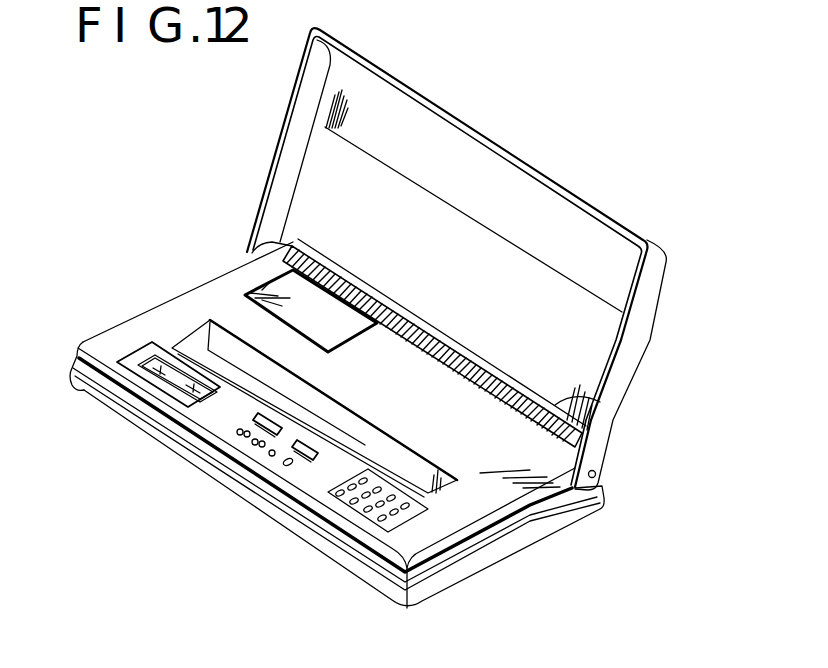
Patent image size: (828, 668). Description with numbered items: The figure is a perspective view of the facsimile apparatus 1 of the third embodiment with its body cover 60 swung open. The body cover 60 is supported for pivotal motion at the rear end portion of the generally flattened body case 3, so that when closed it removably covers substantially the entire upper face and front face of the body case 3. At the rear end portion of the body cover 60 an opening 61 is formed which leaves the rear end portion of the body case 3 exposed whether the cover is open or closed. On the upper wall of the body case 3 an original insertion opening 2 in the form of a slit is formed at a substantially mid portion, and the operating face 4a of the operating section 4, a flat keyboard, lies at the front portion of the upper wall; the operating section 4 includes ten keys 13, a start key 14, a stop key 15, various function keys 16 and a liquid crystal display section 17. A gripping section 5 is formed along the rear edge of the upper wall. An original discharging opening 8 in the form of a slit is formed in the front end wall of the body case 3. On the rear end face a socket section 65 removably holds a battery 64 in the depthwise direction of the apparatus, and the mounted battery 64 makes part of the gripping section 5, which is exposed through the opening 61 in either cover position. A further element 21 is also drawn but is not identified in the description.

The facsimile apparatus 1 is at (593, 170).
The original insertion opening 2 is at (490, 537).
The body case 3 is at (540, 464).
The operating section 4 is at (382, 535).
The operating face 4a is at (423, 515).
The gripping section 5 is at (560, 407).
The original discharging opening 8 is at (188, 438).
The ten keys 13 is at (342, 494).
The start key 14 is at (268, 434).
The stop key 15 is at (302, 462).
The function keys 16 is at (258, 447).
The liquid crystal display section 17 is at (172, 380).
The contact terminal strip 21 is at (497, 376).
The body cover 60 is at (467, 126).
The opening 61 is at (297, 240).
The battery 64 is at (263, 281).
The socket section 65 is at (245, 291).